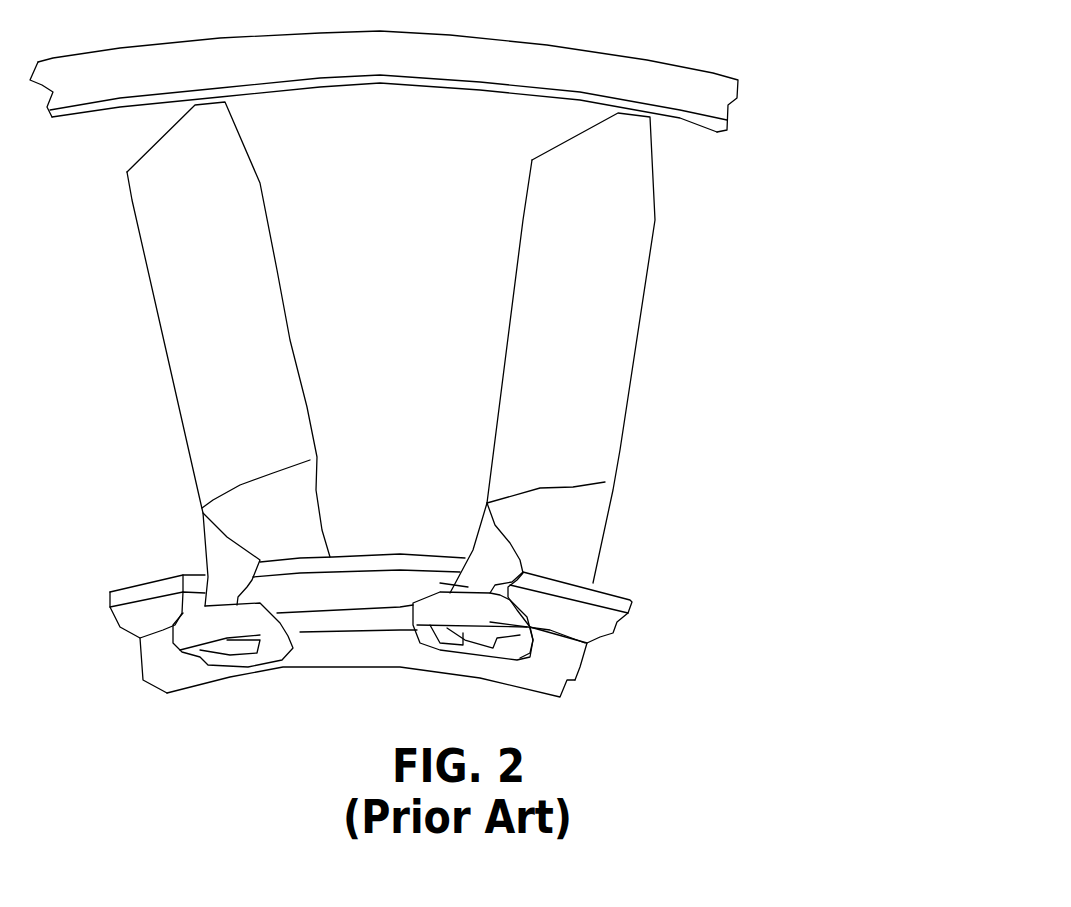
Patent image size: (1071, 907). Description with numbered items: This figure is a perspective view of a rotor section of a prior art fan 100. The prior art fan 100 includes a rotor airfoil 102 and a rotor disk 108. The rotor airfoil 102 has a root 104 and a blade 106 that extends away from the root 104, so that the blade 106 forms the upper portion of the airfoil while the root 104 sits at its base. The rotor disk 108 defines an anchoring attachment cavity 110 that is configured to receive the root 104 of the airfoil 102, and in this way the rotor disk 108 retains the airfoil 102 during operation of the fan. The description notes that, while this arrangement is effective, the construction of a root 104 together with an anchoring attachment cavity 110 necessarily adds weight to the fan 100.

The prior art fan 100 is at (777, 92).
The rotor airfoil 102 is at (666, 385).
The root 104 is at (587, 645).
The blade 106 is at (610, 427).
The rotor disk 108 is at (607, 622).
The anchoring attachment cavity 110 is at (422, 642).